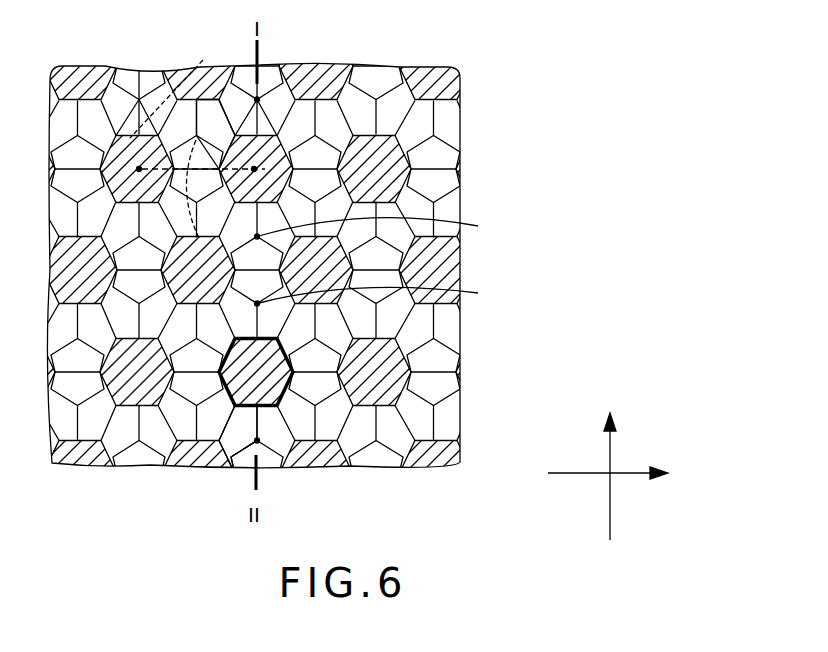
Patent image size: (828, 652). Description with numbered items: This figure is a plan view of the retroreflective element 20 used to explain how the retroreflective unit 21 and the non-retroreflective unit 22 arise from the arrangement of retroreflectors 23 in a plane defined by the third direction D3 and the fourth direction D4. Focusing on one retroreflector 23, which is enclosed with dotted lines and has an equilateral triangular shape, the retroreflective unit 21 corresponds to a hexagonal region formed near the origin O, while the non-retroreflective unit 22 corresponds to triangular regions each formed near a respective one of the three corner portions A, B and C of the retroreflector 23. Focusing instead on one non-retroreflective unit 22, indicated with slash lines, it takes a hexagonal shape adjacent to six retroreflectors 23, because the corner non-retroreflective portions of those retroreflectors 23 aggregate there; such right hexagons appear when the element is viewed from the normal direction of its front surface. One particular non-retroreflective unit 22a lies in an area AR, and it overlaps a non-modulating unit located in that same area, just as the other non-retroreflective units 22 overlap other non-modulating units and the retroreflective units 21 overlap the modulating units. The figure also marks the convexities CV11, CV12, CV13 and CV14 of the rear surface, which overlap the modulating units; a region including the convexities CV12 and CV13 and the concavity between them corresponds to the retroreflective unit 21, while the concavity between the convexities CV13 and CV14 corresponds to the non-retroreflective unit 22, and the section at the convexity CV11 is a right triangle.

The retroreflective element 20 is at (508, 148).
The retroreflective unit 21 is at (207, 125).
The non-retroreflective unit 22 is at (100, 70).
The non-retroreflective unit 22a is at (287, 440).
The retroreflector 23 is at (163, 118).
The convexity CV11 is at (262, 94).
The convexity CV12 is at (397, 226).
The convexity CV13 is at (397, 294).
The convexity CV14 is at (261, 449).
The area AR is at (222, 447).
The third direction D3 is at (625, 477).
The fourth direction D4 is at (609, 462).
The corner portion A is at (192, 171).
The corner portion B is at (263, 173).
The corner portion C is at (166, 89).
The origin O is at (185, 188).